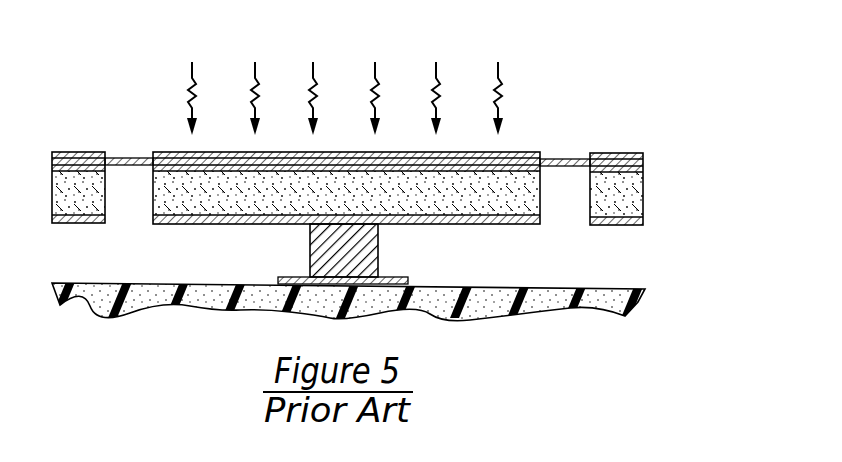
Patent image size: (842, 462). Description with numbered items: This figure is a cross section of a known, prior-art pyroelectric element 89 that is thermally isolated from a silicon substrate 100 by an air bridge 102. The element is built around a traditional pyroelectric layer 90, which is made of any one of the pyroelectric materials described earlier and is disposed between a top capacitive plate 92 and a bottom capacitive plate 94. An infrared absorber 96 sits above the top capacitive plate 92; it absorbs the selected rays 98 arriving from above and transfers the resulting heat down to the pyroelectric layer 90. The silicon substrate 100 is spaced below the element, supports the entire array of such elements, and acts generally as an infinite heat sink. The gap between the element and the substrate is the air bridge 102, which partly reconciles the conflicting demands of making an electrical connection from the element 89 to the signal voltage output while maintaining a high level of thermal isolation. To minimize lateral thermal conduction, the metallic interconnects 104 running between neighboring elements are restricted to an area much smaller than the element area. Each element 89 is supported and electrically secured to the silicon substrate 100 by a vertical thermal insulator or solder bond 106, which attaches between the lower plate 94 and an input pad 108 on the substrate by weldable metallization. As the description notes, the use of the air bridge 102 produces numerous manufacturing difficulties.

The pyroelectric element 89 is at (610, 74).
The pyroelectric layer 90 is at (153, 202).
The top capacitive plate 92 is at (556, 170).
The bottom capacitive plate 94 is at (523, 225).
The infrared absorber 96 is at (523, 152).
The selected rays 98 is at (378, 70).
The silicon substrate 100 is at (645, 291).
The air bridge 102 is at (172, 265).
The metallic interconnects 104 is at (128, 157).
The solder bond 106 is at (380, 248).
The input pad 108 is at (290, 280).